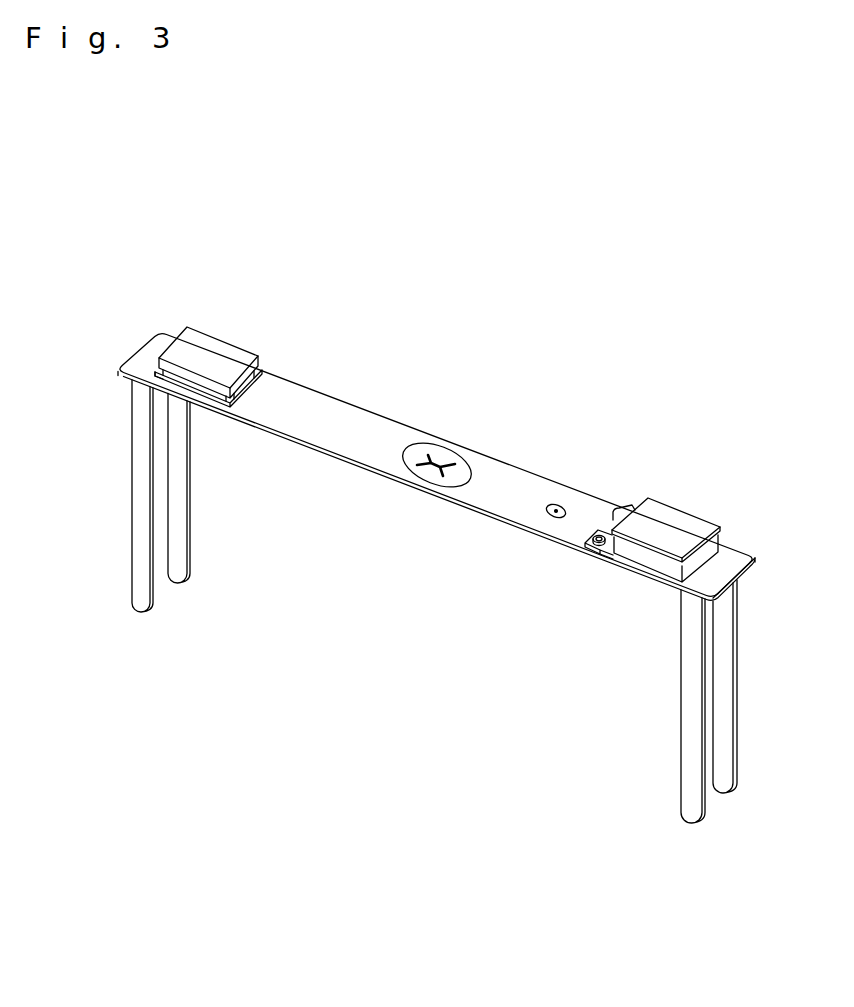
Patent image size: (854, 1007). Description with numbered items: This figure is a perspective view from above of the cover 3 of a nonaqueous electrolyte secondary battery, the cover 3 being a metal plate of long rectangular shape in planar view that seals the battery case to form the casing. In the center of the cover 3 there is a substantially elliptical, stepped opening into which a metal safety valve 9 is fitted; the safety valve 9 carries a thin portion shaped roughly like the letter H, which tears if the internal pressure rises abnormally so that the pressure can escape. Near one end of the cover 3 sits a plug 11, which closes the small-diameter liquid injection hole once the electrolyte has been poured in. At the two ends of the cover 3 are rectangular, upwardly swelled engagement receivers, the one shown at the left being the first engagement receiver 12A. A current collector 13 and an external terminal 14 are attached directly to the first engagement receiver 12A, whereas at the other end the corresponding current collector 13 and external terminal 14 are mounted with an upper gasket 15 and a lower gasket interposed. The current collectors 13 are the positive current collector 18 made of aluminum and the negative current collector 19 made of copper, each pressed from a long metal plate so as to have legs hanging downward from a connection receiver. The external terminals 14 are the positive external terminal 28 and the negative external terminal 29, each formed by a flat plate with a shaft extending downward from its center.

The cover 3 is at (352, 407).
The safety valve 9 is at (437, 457).
The plug 11 is at (557, 500).
The first engagement receiver 12A is at (153, 371).
The current collector 13 is at (434, 601).
The external terminal 14 is at (467, 429).
The upper gasket 15 is at (715, 547).
The positive current collector 18 is at (190, 513).
The negative current collector 19 is at (681, 733).
The positive external terminal 28 is at (236, 347).
The negative external terminal 29 is at (677, 518).